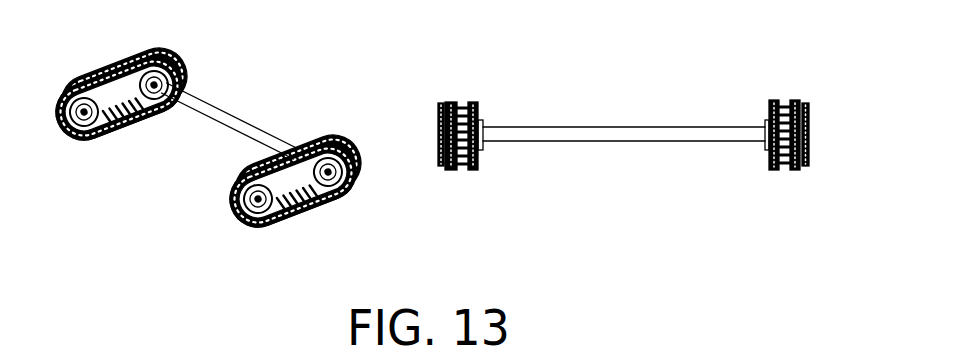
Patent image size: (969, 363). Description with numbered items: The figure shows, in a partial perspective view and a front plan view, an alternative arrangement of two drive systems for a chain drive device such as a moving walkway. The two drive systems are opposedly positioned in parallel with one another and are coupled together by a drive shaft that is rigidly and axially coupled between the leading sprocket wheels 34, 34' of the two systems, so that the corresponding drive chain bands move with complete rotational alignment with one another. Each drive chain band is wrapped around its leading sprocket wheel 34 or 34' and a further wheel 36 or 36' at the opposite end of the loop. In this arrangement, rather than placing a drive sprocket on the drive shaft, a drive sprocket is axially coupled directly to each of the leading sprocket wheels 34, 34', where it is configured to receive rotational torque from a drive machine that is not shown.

The leading sprocket wheel 34 is at (328, 172).
The leading sprocket wheel 34' is at (154, 85).
The front wheel 36 is at (258, 199).
The front wheel (opposite side) 36' is at (84, 112).